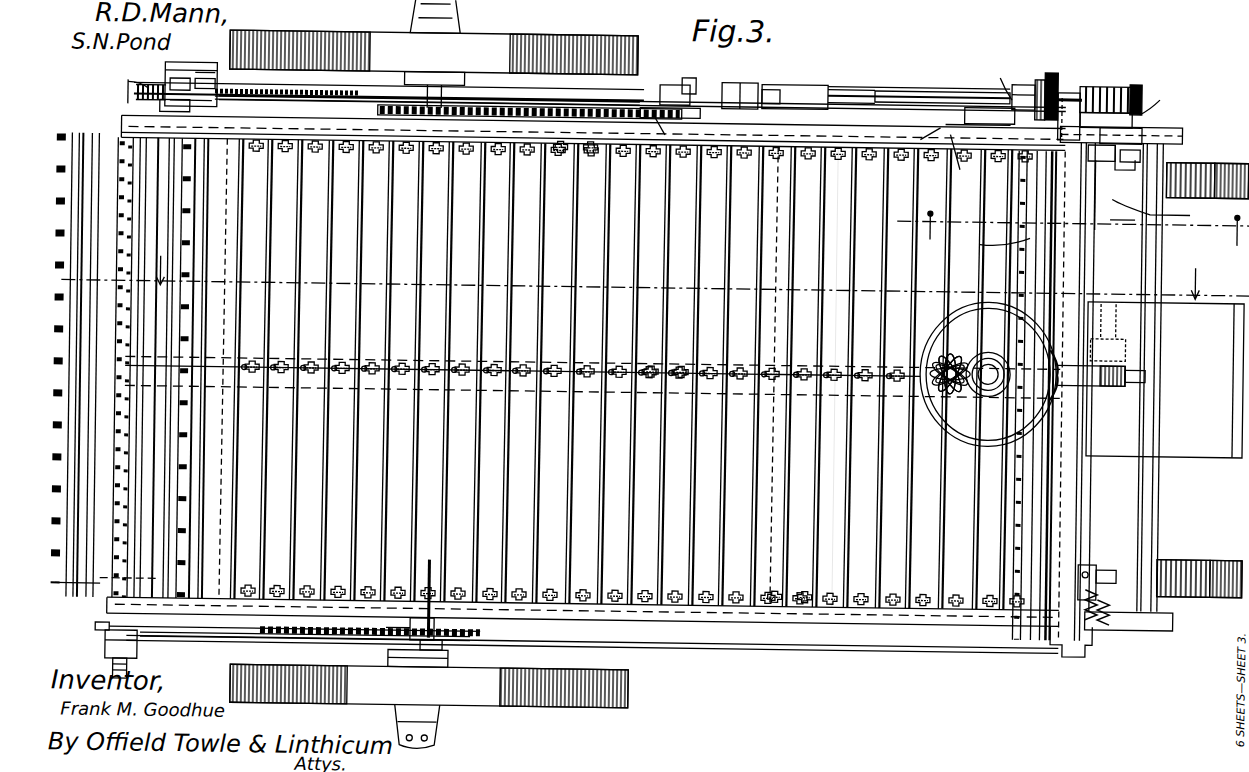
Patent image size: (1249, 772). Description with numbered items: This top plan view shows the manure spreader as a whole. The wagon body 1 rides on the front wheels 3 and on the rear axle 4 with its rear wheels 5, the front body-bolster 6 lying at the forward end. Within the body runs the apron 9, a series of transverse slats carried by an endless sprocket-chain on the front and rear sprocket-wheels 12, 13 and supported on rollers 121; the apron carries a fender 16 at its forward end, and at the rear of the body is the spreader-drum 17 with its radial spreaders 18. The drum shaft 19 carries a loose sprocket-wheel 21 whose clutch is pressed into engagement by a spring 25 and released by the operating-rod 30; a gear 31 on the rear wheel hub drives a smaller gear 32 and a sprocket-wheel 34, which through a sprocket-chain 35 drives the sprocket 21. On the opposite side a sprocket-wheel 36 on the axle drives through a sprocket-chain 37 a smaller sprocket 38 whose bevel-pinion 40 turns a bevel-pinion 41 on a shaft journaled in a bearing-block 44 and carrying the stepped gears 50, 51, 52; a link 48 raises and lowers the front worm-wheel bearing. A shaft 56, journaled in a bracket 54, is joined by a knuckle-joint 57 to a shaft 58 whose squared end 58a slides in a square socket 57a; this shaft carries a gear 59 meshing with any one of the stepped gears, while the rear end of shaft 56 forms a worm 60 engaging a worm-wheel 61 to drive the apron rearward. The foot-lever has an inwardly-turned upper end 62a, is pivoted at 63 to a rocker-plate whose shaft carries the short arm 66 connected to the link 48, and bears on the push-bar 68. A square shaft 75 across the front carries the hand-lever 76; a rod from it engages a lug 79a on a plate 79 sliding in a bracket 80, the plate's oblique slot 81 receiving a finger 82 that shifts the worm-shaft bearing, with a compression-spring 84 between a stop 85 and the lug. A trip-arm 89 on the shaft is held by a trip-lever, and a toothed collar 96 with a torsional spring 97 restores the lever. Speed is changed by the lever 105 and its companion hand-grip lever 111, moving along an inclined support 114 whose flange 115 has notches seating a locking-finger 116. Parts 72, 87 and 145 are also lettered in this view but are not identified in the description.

The body of the wagon 1 is at (630, 151).
The front wheels 3 is at (1184, 168).
The rear axle 4 is at (652, 450).
The rear wheels 5 is at (429, 375).
The front body-bolster 6 is at (1072, 228).
The apron 9 is at (835, 377).
The front sprocket-wheel 12 is at (1145, 383).
The rear sprocket-wheel 13 is at (215, 365).
The fender 16 is at (1002, 232).
The spreader-drum 17 is at (77, 598).
The spreaders 18 is at (127, 534).
The drum shaft 19 is at (128, 585).
The sprocket-wheel 21 is at (279, 623).
The spring 25 is at (137, 652).
The operating-rod 30 is at (683, 647).
The gear 31 is at (450, 648).
The smaller gear 32 is at (310, 636).
The sprocket-wheel 34 is at (436, 626).
The sprocket-chain 35 is at (210, 638).
The sprocket-wheel 36 is at (375, 114).
The sprocket-chain 37 is at (468, 105).
The smaller sprocket 38 is at (685, 118).
The bevel-pinion 40 is at (668, 88).
The bevel-pinion 41 is at (690, 90).
The bearing-block 44 is at (1070, 96).
The link 48 is at (1098, 87).
The gear 50 is at (1050, 73).
The gear 51 is at (1040, 80).
The gear 52 is at (1022, 85).
The bracket 54 is at (740, 90).
The shaft 56 is at (328, 94).
The knuckle-joint 57 is at (775, 95).
The square socket 57a is at (810, 95).
The shaft 58 is at (928, 98).
The squared end 58a is at (862, 98).
The gear 59 is at (1068, 93).
The worm 60 is at (152, 85).
The worm-wheel 61 is at (130, 80).
The inwardly-turned upper end 62a is at (1160, 212).
The pivot 63 is at (1130, 140).
The short arm 66 is at (1156, 100).
The push-bar 68 is at (1125, 170).
The block 72 is at (1095, 160).
The square shaft 75 is at (1088, 493).
The hand-lever 76 is at (1095, 200).
The plate 79 is at (206, 72).
The lug 79a is at (248, 86).
The bracket 80 is at (192, 106).
The oblique slot 81 is at (204, 75).
The finger 82 is at (180, 78).
The compression-spring 84 is at (268, 95).
The stop 85 is at (296, 98).
The foot 87 is at (1092, 652).
The trip-arm 89 is at (1095, 568).
The collar 96 is at (1098, 598).
The torsional spring 97 is at (1100, 625).
The lever 105 is at (960, 130).
The hand-grip lever 111 is at (975, 130).
The inclined stationary support 114 is at (1130, 232).
The upstanding flange 115 is at (980, 108).
The locking-finger 116 is at (1001, 77).
The roller 121 is at (585, 155).
The stop 145 is at (1122, 90).